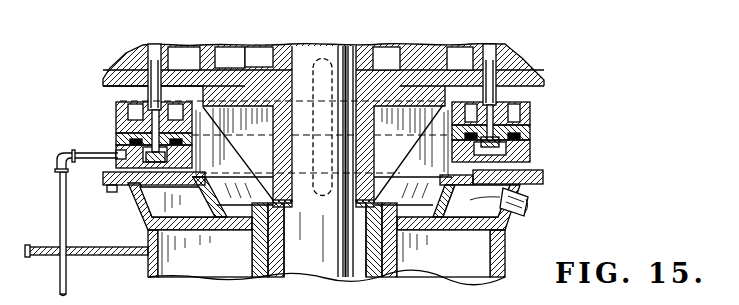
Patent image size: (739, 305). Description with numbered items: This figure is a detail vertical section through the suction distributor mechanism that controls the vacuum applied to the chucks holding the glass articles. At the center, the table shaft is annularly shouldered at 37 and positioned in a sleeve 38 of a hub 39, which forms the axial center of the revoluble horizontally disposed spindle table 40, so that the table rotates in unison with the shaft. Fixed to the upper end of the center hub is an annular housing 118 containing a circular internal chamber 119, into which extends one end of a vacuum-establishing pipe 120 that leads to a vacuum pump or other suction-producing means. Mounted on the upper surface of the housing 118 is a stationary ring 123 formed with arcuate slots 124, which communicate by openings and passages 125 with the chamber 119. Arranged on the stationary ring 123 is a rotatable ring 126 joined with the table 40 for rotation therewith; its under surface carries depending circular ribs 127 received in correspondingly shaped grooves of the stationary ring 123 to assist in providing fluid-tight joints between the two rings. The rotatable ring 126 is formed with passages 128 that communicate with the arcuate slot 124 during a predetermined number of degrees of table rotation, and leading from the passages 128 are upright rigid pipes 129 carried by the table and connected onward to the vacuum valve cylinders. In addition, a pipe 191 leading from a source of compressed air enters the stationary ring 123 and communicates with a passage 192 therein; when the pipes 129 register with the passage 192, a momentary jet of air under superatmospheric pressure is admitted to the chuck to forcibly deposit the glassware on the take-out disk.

The spindle table 40 is at (233, 45).
The upright rigid pipes 129 is at (152, 58).
The passages 128 is at (157, 119).
The rotatable ring 126 is at (530, 107).
The arcuate slots 124 is at (530, 125).
The stationary ring 123 is at (530, 147).
The openings and passages 125 is at (533, 158).
The depending circular ribs 127 is at (200, 150).
The hub 39 is at (291, 54).
The sleeve 38 is at (290, 163).
The annular shoulder 37 is at (307, 206).
The passage 192 is at (167, 183).
The circular internal chamber 119 is at (530, 200).
The annular housing 118 is at (438, 227).
The vacuum-establishing pipe 120 is at (528, 206).
The compressed air pipe 191 is at (63, 198).